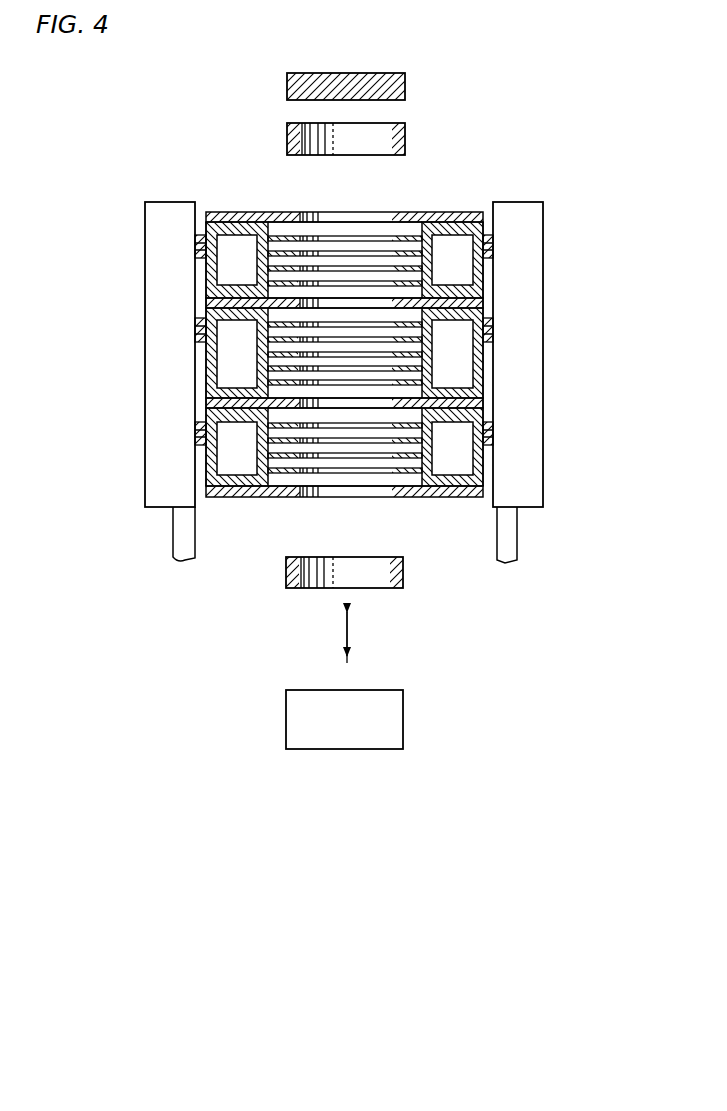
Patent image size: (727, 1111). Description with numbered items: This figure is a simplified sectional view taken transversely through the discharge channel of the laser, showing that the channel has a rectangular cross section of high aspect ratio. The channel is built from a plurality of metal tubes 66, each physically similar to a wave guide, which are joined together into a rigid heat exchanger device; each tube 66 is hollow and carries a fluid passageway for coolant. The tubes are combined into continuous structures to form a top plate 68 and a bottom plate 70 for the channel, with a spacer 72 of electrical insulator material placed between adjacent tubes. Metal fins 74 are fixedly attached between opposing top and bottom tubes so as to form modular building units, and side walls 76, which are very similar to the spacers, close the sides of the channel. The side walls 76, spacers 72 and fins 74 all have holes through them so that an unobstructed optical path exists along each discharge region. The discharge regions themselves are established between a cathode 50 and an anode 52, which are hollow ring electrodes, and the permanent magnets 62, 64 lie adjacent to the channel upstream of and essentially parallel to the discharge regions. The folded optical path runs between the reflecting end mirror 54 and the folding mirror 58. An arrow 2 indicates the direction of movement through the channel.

The direction of movement arrow 2 is at (347, 633).
The cathode 50 is at (405, 572).
The anode 52 is at (400, 143).
The reflecting end mirror 54 is at (395, 87).
The folding mirror 58 is at (395, 718).
The permanent magnet 62 is at (523, 487).
The permanent magnet 64 is at (147, 466).
The metal tube 66 is at (488, 264).
The top plate 68 is at (488, 382).
The bottom plate 70 is at (196, 378).
The spacer 72 is at (488, 303).
The metal fin 74 is at (396, 238).
The side wall 76 is at (463, 213).